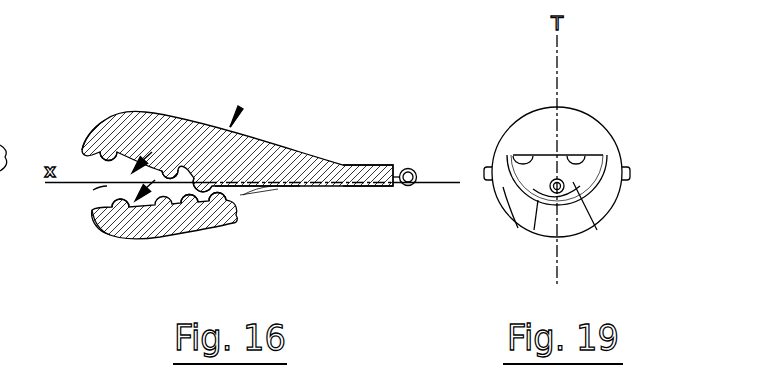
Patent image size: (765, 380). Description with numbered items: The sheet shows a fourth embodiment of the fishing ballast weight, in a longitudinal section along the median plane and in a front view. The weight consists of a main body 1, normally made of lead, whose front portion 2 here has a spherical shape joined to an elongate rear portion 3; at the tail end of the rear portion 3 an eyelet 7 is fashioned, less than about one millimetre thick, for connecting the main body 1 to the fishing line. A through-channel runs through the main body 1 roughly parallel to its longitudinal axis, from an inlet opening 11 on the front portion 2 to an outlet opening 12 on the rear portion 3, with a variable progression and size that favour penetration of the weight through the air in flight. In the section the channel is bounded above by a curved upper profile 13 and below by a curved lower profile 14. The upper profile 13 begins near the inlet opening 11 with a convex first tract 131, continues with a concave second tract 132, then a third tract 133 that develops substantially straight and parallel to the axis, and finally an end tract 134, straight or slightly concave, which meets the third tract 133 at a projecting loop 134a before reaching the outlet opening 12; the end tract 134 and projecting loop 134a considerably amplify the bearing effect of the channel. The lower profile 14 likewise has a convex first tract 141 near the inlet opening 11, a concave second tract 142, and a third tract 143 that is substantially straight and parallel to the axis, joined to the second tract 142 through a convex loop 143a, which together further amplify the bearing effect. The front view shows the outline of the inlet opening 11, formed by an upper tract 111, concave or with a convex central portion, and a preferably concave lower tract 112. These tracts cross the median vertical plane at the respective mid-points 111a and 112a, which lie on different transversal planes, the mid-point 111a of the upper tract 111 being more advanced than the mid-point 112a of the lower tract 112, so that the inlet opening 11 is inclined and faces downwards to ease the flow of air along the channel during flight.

In FIG. 16, the main body 1 is at (241, 107).
In FIG. 16, the front portion 2 is at (84, 133).
In FIG. 16, the rear portion 3 is at (313, 168).
In FIG. 16, the eyelet 7 is at (407, 168).
In FIG. 16, the inlet opening 11 is at (93, 190).
In FIG. 19, the inlet opening 11 is at (573, 182).
In FIG. 16, the outlet opening 12 is at (243, 195).
In FIG. 16, the upper profile 13 is at (116, 172).
In FIG. 16, the lower profile 14 is at (171, 185).
In FIG. 16, the first tract 131 is at (78, 158).
In FIG. 16, the second tract 132 is at (100, 150).
In FIG. 16, the third tract 133 is at (188, 170).
In FIG. 16, the end tract 134 is at (267, 188).
In FIG. 16, the projecting loop 134a is at (212, 186).
In FIG. 16, the first tract 141 is at (93, 207).
In FIG. 16, the second tract 142 is at (118, 201).
In FIG. 16, the third tract 143 is at (232, 203).
In FIG. 16, the convex loop 143a is at (192, 203).
In FIG. 19, the upper tract 111 is at (515, 153).
In FIG. 19, the mid-point 111a is at (587, 153).
In FIG. 19, the lower tract 112 is at (503, 187).
In FIG. 19, the mid-point 112a is at (543, 207).